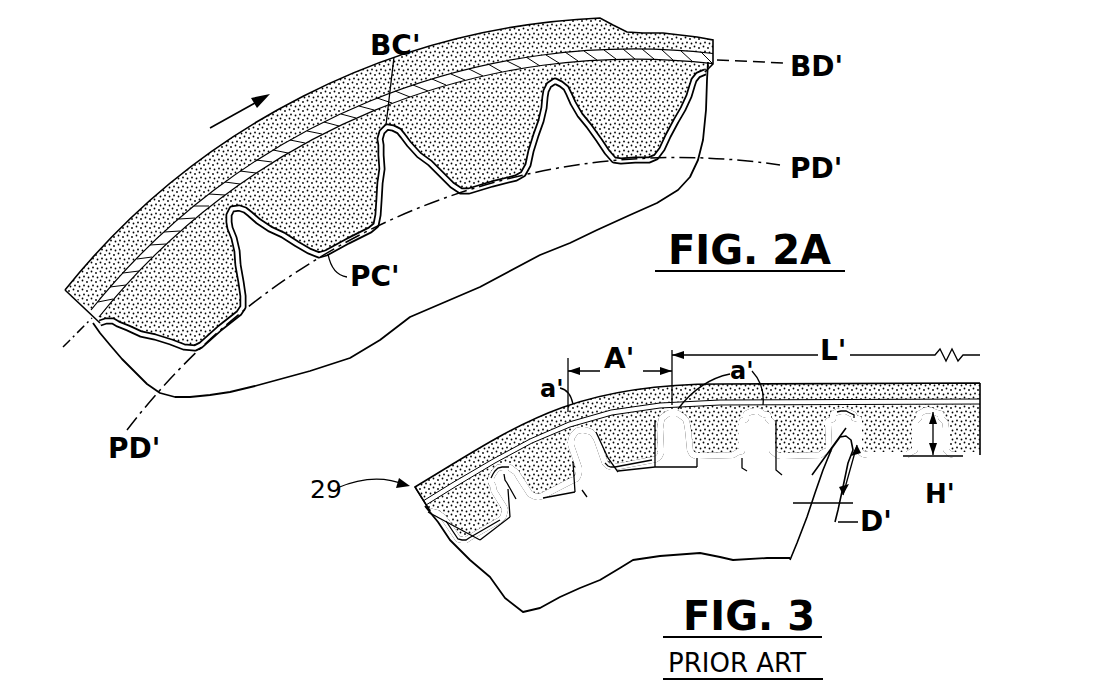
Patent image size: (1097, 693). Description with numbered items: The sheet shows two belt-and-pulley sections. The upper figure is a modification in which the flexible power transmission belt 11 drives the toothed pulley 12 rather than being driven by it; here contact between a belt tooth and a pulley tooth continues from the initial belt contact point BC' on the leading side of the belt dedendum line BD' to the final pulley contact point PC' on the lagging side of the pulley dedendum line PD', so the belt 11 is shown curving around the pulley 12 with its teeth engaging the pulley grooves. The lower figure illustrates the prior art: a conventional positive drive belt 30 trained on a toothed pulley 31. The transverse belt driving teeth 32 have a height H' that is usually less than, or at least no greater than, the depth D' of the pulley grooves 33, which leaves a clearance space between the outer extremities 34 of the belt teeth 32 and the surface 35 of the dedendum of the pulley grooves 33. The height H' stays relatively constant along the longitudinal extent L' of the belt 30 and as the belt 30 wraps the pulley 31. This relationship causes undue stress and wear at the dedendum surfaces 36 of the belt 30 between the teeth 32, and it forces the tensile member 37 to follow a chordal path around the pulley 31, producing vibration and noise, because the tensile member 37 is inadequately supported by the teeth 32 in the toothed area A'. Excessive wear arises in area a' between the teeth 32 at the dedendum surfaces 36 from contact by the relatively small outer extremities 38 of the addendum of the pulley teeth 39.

In FIG. 2A, the flexible power transmission belt 11 is at (167, 212).
In FIG. 2A, the toothed driving pulley 12 is at (252, 368).
In FIG. 3, the positive drive belt 30 is at (457, 460).
In FIG. 3, the toothed pulley 31 is at (490, 578).
In FIG. 3, the belt driving teeth 32 is at (468, 511).
In FIG. 3, the pulley grooves 33 is at (483, 531).
In FIG. 3, the outer extremities of the belt teeth 34 is at (497, 528).
In FIG. 3, the surface of the dedendum of the pulley grooves 35 is at (512, 519).
In FIG. 3, the dedendum surfaces of the belt 36 is at (498, 460).
In FIG. 3, the tensile member 37 is at (428, 506).
In FIG. 3, the outer extremities of the addendum of the pulley teeth 38 is at (490, 457).
In FIG. 3, the pulley teeth 39 is at (810, 517).